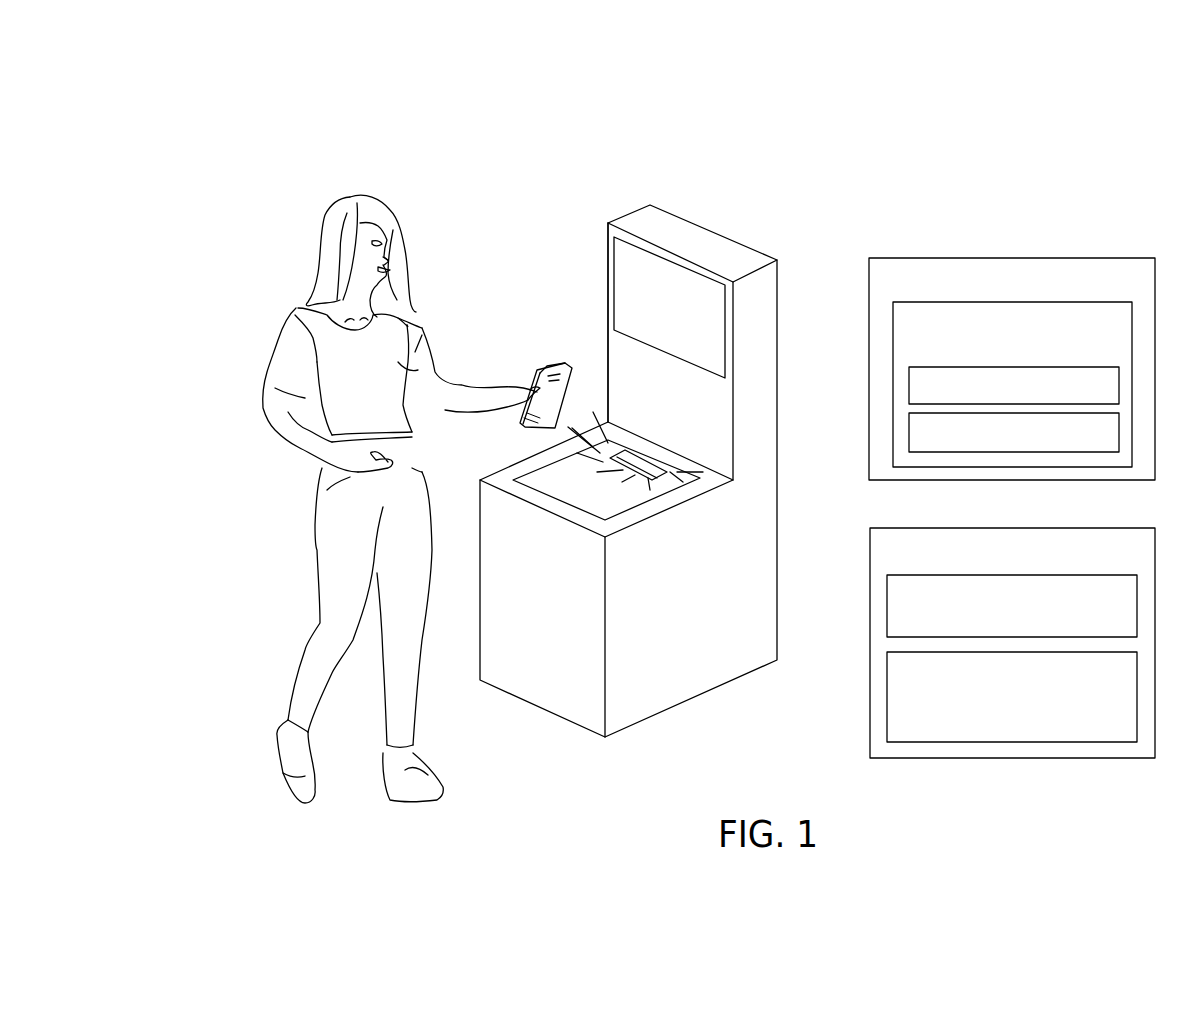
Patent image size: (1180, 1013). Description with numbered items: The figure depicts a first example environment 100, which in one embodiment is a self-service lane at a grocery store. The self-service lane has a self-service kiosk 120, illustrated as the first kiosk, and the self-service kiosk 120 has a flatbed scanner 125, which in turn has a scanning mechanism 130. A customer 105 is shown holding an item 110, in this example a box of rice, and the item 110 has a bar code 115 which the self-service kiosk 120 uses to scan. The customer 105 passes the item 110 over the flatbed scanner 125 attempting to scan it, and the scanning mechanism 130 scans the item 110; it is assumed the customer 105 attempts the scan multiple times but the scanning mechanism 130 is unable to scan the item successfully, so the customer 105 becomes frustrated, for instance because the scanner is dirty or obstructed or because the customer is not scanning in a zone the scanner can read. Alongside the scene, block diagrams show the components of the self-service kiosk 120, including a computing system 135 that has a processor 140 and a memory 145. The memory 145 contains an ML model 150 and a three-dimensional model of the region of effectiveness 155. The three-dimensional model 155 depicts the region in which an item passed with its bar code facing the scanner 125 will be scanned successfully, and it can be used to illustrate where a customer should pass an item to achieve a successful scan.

The example environment 100 is at (302, 105).
The customer 105 is at (300, 307).
The item 110 is at (557, 367).
The bar code 115 is at (538, 432).
The self-service kiosk 120 is at (637, 225).
The flatbed scanner 125 is at (598, 500).
The scanning mechanism 130 is at (640, 462).
The computing system 135 is at (1012, 530).
The processor 140 is at (1014, 385).
The memory 145 is at (1012, 585).
The ML model 150 is at (1012, 606).
The 3D model of the region of effectiveness 155 is at (1012, 697).